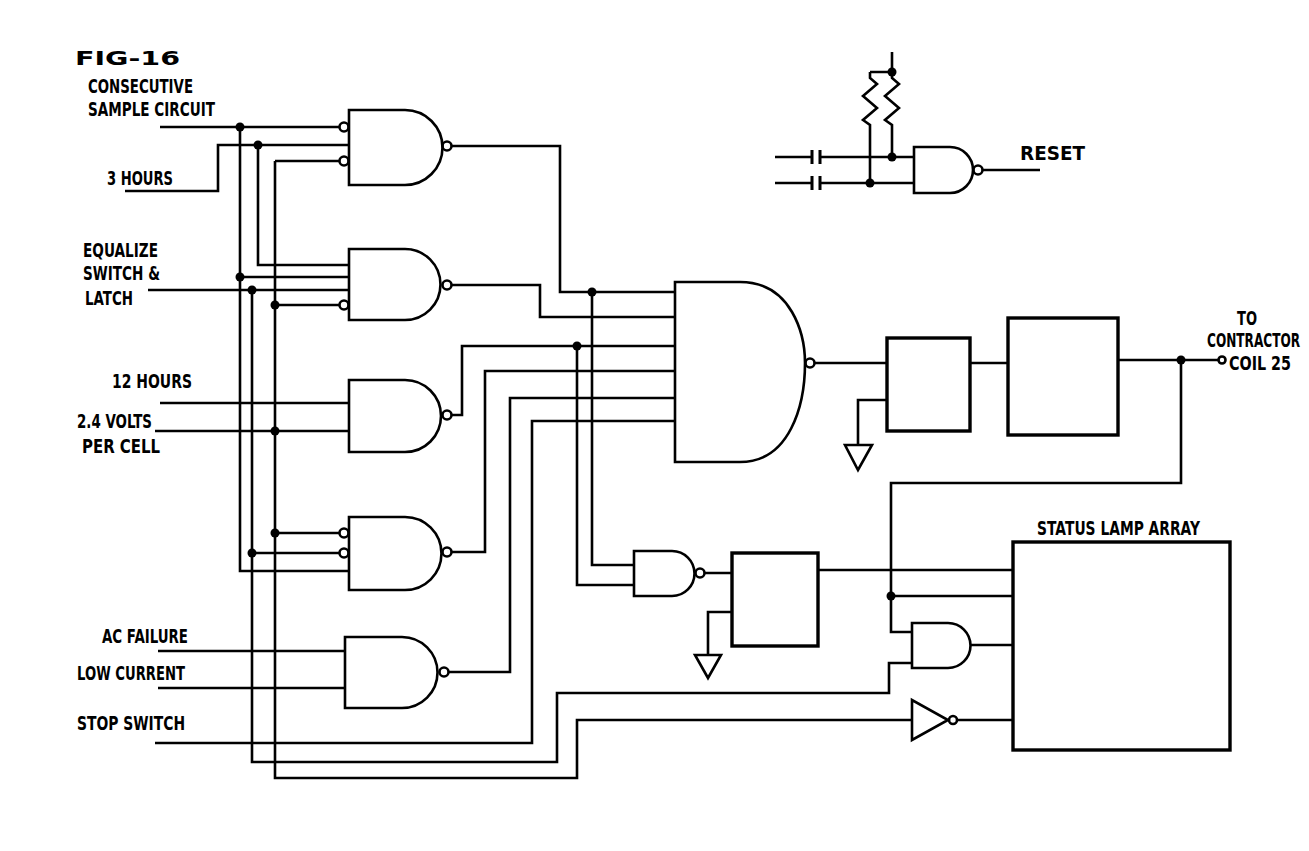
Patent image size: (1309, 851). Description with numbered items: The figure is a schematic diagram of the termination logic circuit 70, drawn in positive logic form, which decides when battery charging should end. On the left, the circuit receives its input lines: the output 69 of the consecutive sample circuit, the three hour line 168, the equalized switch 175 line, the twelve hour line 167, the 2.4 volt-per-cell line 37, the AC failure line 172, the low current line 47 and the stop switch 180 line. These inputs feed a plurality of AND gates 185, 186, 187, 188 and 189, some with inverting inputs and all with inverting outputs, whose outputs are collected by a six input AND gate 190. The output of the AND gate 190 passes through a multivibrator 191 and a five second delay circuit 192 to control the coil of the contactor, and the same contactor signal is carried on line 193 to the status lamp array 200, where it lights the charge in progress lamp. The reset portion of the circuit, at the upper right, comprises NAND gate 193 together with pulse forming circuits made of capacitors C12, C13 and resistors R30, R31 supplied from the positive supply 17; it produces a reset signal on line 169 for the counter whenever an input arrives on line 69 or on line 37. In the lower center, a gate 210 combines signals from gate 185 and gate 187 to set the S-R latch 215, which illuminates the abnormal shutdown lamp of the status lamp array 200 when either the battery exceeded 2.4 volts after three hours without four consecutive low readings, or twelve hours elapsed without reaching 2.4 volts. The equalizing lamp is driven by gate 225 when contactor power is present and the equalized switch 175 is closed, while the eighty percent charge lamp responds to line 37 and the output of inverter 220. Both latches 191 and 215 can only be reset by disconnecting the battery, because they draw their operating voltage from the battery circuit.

The termination logic circuit 70 is at (306, 79).
The output of the consecutive sample circuit 69 is at (200, 128).
The 3 hours signal line 168 is at (206, 192).
The equalized switch 175 is at (214, 291).
The 12 hours signal line 167 is at (229, 389).
The 2.4 volt-per-cell line 37 is at (226, 431).
The AC failure signal line 172 is at (240, 651).
The low current signal line 47 is at (233, 688).
The stop switch 180 is at (225, 745).
The AND gate 185 is at (430, 114).
The AND gate 186 is at (433, 262).
The AND gate 187 is at (433, 383).
The AND gate 188 is at (437, 519).
The AND gate 189 is at (433, 640).
The six input AND gate 190 is at (716, 281).
The multivibrator 191 is at (935, 338).
The five second delay circuit 192 is at (1100, 318).
The NAND gate 193 is at (1181, 452).
The line 169 is at (1005, 170).
The positive supply 17 is at (902, 60).
The resistor R30 is at (848, 127).
The resistor R31 is at (912, 114).
The capacitor C12 is at (836, 150).
The capacitor C13 is at (831, 198).
The NAND gate 210 is at (678, 598).
The S-R latch 215 is at (797, 647).
The AND gate 225 is at (960, 668).
The inverter 220 is at (928, 735).
The status lamp array 200 is at (1140, 750).